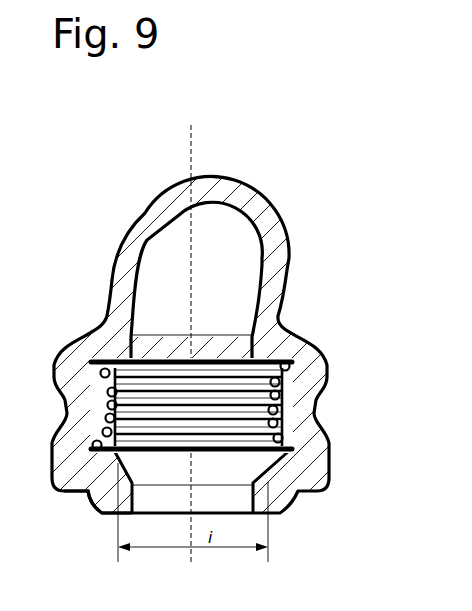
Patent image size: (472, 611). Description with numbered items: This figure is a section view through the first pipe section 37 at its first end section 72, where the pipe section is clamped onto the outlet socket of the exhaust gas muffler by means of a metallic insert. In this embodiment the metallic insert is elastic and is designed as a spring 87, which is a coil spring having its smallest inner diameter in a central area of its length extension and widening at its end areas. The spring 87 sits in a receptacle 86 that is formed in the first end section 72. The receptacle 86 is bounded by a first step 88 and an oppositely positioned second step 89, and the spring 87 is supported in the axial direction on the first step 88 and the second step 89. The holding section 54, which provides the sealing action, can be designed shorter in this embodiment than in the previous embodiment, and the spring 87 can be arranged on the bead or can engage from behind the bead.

The first pipe section 37 is at (257, 198).
The first end section 72 is at (84, 322).
The receptacle 86 is at (90, 362).
The spring 87 is at (240, 385).
The first step 88 is at (270, 352).
The second step 89 is at (285, 460).
The holding section 54 is at (123, 500).